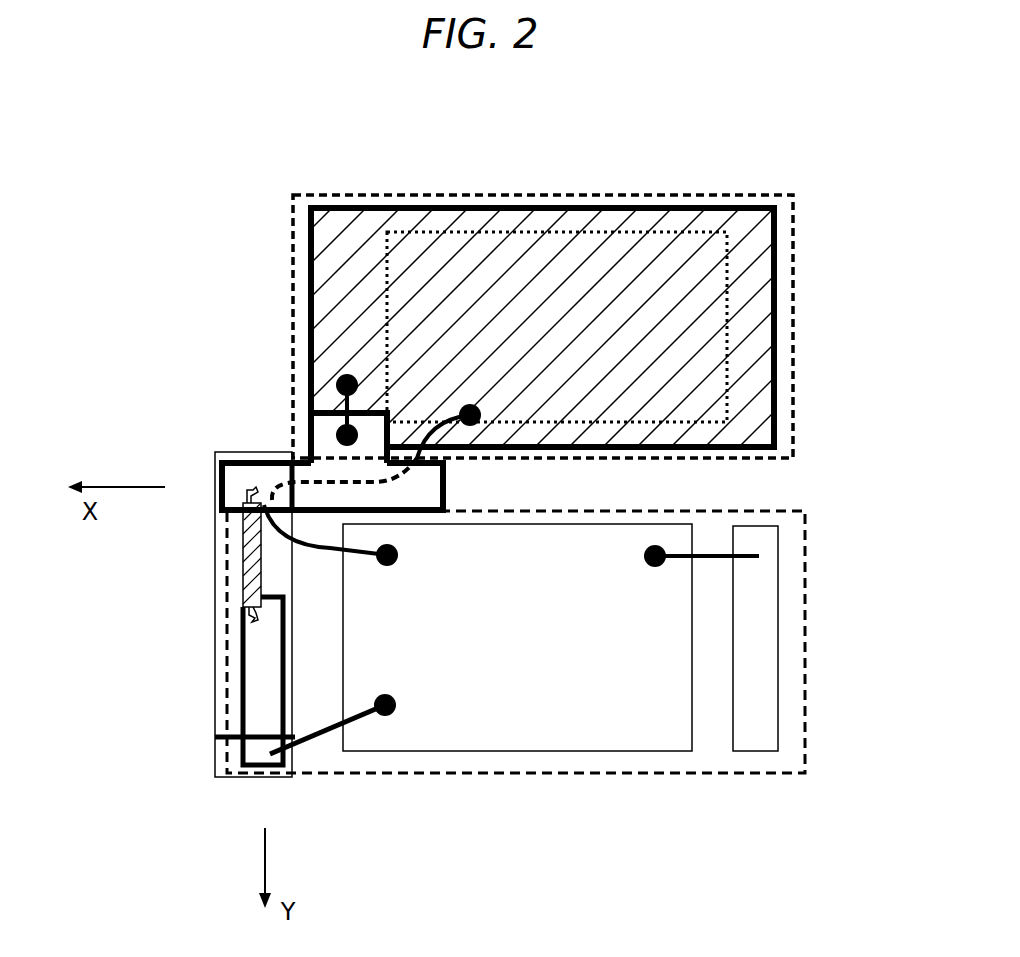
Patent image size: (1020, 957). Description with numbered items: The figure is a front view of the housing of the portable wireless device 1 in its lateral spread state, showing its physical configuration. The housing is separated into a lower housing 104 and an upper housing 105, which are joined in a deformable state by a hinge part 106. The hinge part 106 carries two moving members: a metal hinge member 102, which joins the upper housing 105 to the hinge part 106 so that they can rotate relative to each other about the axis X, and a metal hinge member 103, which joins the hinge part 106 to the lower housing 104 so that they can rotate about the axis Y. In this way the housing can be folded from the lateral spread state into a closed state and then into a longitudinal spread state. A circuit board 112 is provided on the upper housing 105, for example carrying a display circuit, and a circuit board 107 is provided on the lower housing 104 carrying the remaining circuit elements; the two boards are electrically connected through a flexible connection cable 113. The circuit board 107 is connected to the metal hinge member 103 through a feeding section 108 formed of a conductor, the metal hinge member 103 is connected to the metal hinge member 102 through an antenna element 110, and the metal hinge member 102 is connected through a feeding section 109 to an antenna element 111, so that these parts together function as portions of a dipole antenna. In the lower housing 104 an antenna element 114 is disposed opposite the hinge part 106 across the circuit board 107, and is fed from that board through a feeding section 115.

The portable wireless device 1 is at (750, 181).
The metal hinge member 102 is at (258, 480).
The metal hinge member 103 is at (258, 686).
The lower housing 104 is at (807, 530).
The upper housing 105 is at (797, 293).
The hinge part 106 is at (232, 575).
The circuit board 107 is at (645, 723).
The feeding section 108 is at (300, 776).
The feeding section 109 is at (335, 388).
The antenna element 110 is at (240, 530).
The antenna element 111 is at (335, 245).
The circuit board 112 is at (753, 375).
The flexible connection cable 113 is at (356, 550).
The antenna element 114 is at (765, 715).
The feeding section 115 is at (700, 552).